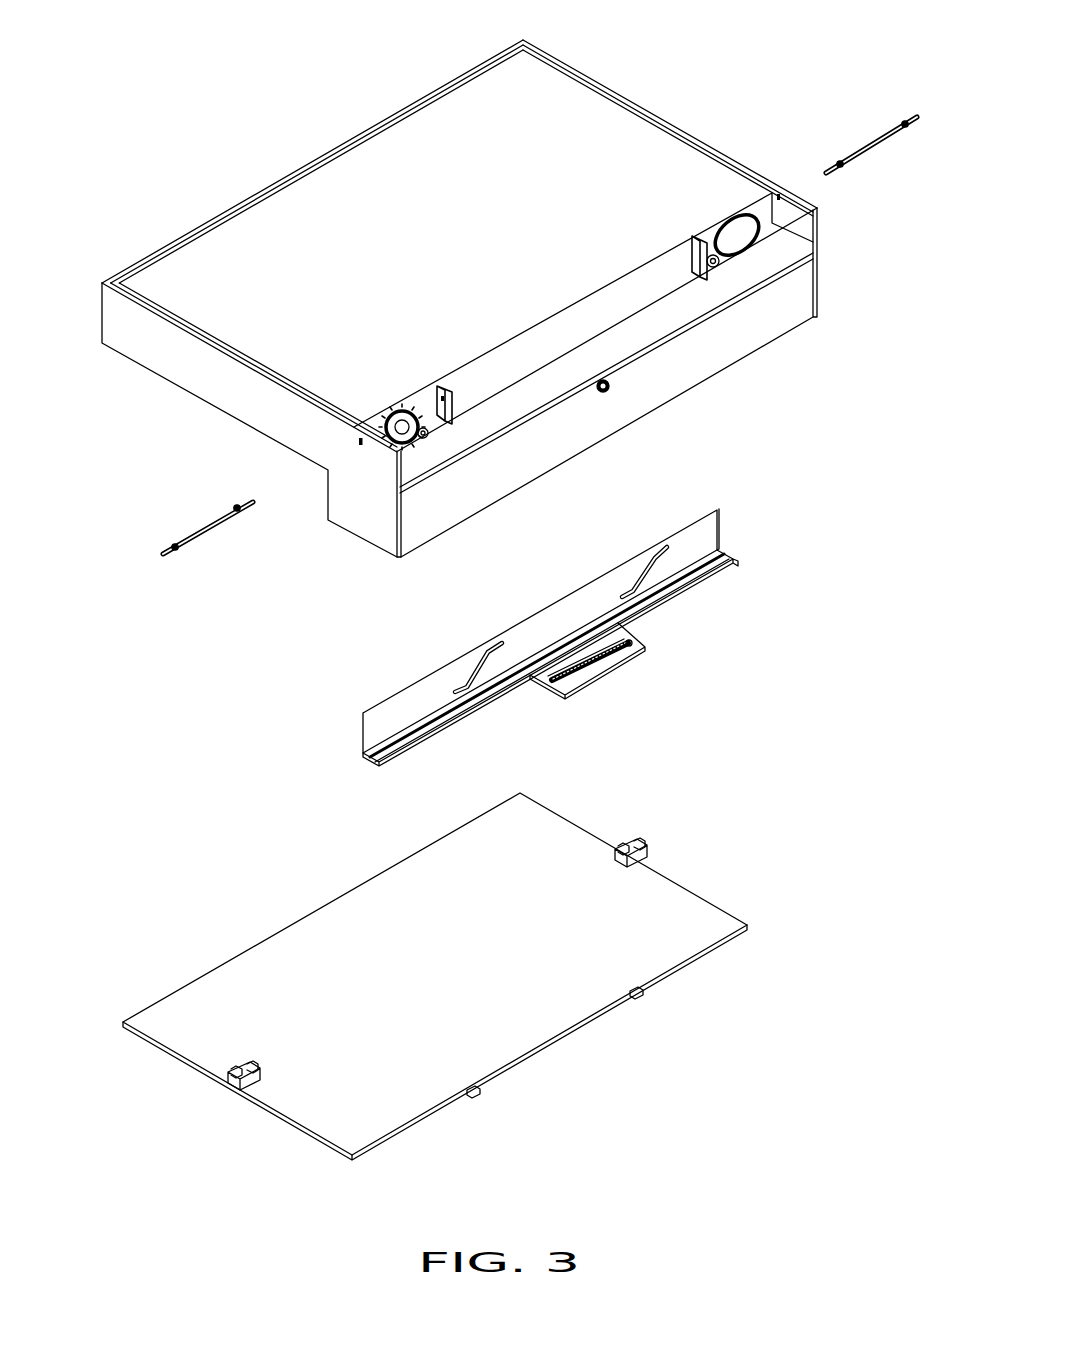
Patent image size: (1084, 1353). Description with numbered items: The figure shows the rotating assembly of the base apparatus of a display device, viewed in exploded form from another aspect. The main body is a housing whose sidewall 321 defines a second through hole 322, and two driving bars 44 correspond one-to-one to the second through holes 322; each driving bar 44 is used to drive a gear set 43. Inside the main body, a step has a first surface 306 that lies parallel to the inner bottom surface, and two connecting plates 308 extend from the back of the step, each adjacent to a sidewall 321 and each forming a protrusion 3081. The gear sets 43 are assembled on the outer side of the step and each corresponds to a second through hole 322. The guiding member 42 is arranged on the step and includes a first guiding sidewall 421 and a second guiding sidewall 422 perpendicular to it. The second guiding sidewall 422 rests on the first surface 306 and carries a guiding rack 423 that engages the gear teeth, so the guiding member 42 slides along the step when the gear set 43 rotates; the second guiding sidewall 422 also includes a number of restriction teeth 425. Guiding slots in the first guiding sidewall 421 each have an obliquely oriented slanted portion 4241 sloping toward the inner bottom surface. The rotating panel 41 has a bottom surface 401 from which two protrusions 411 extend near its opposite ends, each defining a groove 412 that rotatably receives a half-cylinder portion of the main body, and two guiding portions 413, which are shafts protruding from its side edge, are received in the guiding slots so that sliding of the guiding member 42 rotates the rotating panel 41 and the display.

The sidewall 321 is at (180, 367).
The second through hole 322 is at (358, 441).
The first surface 306 is at (738, 295).
The connecting plate 308 is at (699, 276).
The protrusion 3081 is at (452, 412).
The gear set 43 is at (749, 246).
The driving bar 44 is at (858, 158).
The guiding member 42 is at (537, 637).
The first guiding sidewall 421 is at (708, 535).
The guiding rack 423 is at (708, 572).
The second guiding sidewall 422 is at (640, 648).
The restriction teeth 425 is at (592, 677).
The slanted portion 4241 is at (632, 570).
The rotating panel 41 is at (459, 976).
The bottom surface 401 is at (698, 917).
The protrusion 411 is at (646, 862).
The groove 412 is at (631, 852).
The guiding portion 413 is at (642, 997).